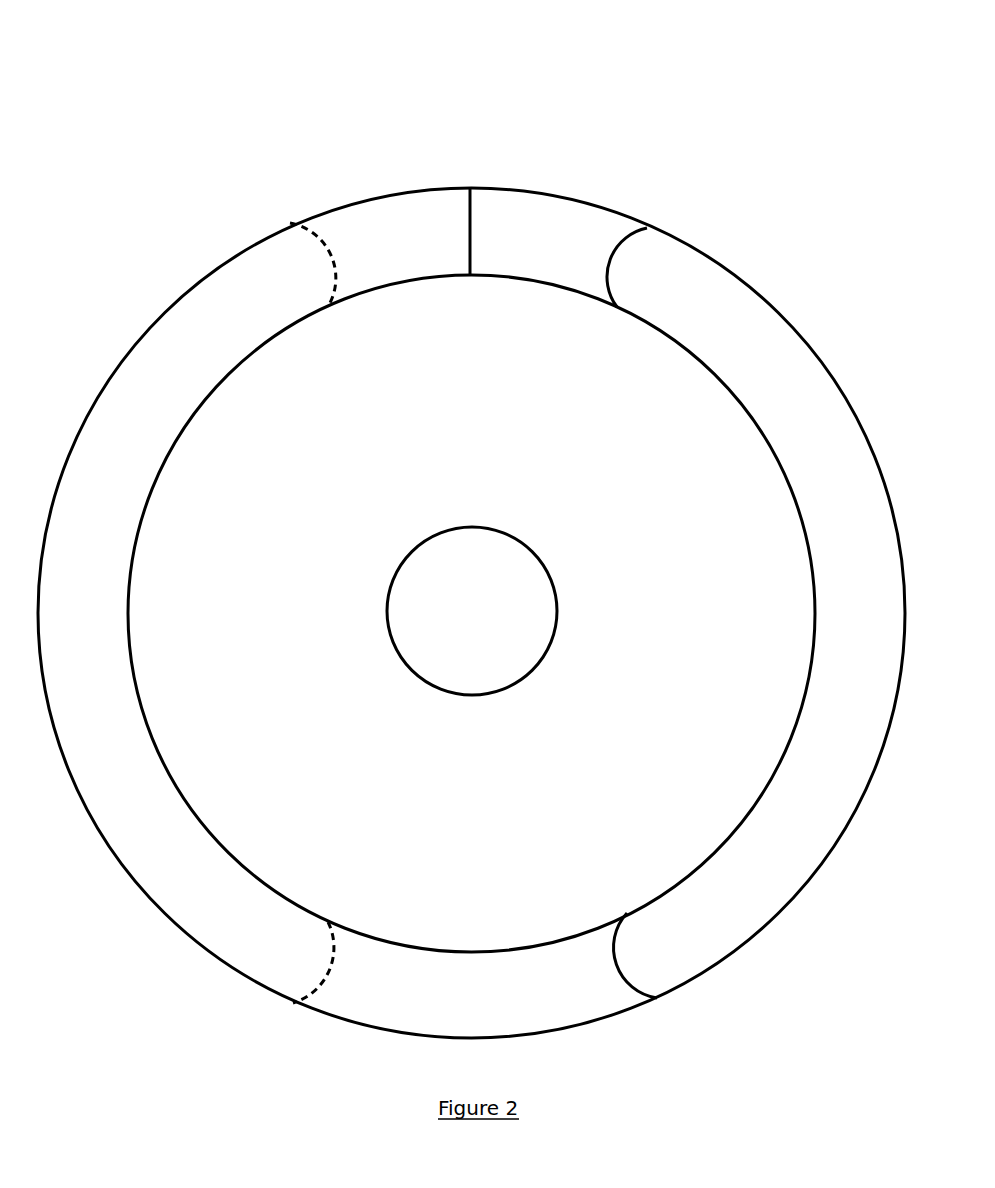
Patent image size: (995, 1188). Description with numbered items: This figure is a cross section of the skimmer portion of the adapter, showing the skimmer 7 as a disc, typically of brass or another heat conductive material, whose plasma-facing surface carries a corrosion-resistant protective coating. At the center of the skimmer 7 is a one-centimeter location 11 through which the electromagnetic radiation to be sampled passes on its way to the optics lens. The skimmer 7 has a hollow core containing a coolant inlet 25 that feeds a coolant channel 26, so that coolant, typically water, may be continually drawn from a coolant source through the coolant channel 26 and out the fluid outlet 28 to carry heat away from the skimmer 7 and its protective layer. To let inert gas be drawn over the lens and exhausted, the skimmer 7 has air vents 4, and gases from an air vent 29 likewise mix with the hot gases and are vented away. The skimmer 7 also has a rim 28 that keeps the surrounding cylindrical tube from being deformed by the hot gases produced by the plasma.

The air vents 4 is at (775, 837).
The skimmer 7 is at (662, 527).
The 1.0 cm location 11 is at (432, 610).
The coolant inlet 25 is at (395, 242).
The coolant channel 26 is at (168, 387).
The fluid outlet 28 is at (547, 242).
The air vent 29 is at (165, 917).